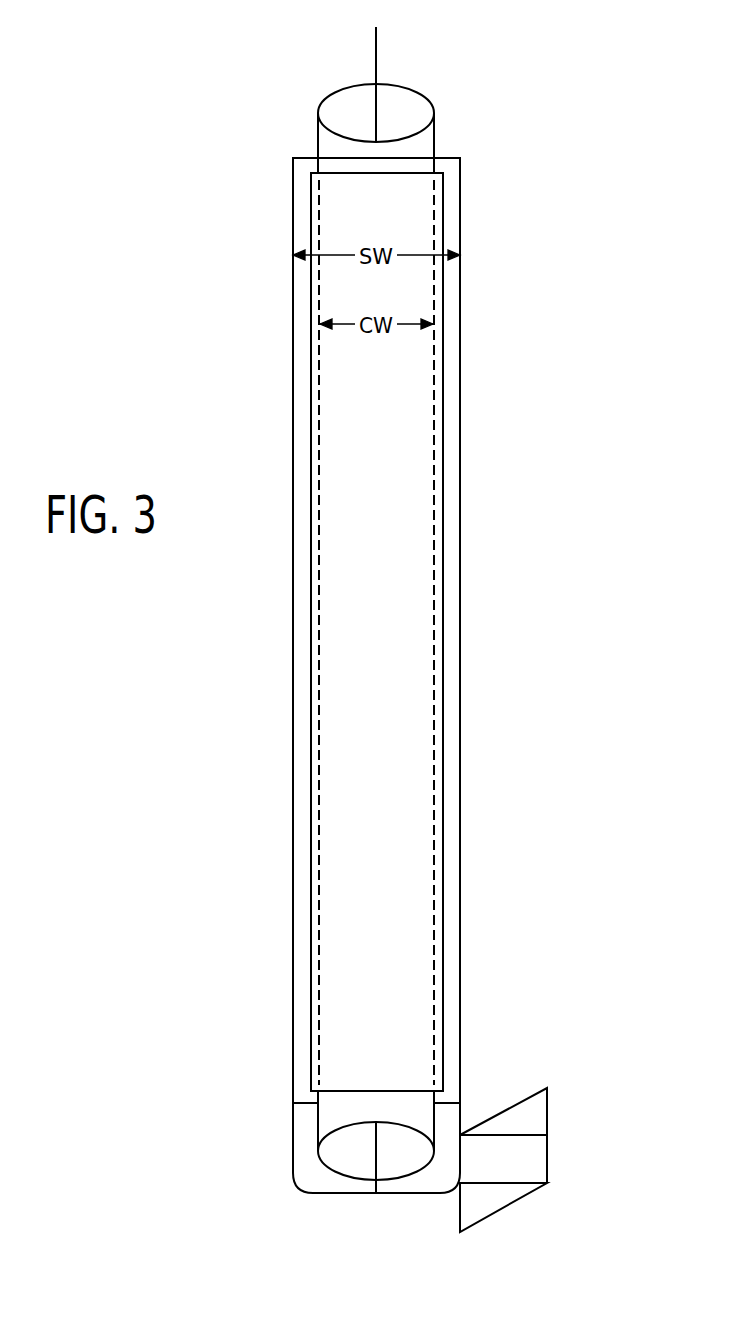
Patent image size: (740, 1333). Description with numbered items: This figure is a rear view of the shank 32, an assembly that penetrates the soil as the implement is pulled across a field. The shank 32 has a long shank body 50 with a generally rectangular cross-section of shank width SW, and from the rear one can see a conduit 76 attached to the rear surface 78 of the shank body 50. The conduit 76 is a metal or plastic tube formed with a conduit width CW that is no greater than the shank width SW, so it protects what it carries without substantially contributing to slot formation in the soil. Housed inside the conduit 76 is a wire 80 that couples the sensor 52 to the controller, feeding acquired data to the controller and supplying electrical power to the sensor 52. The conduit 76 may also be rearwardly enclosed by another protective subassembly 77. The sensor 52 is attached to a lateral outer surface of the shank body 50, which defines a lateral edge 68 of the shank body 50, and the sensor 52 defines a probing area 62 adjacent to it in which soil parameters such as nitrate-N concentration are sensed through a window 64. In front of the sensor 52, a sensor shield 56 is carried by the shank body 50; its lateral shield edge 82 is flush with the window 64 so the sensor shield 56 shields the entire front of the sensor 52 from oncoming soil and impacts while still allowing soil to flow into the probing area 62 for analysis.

The shank 32 is at (505, 377).
The shank body 50 is at (460, 661).
The sensor 52 is at (535, 1167).
The sensor shield 56 is at (522, 1100).
The probing area 62 is at (562, 1134).
The window 64 is at (547, 1158).
The lateral edge 68 is at (460, 715).
The conduit 76 is at (319, 632).
The protective subassembly 77 is at (311, 290).
The rear surface 78 is at (300, 415).
The wire 80 is at (376, 55).
The lateral shield edge 82 is at (547, 1110).